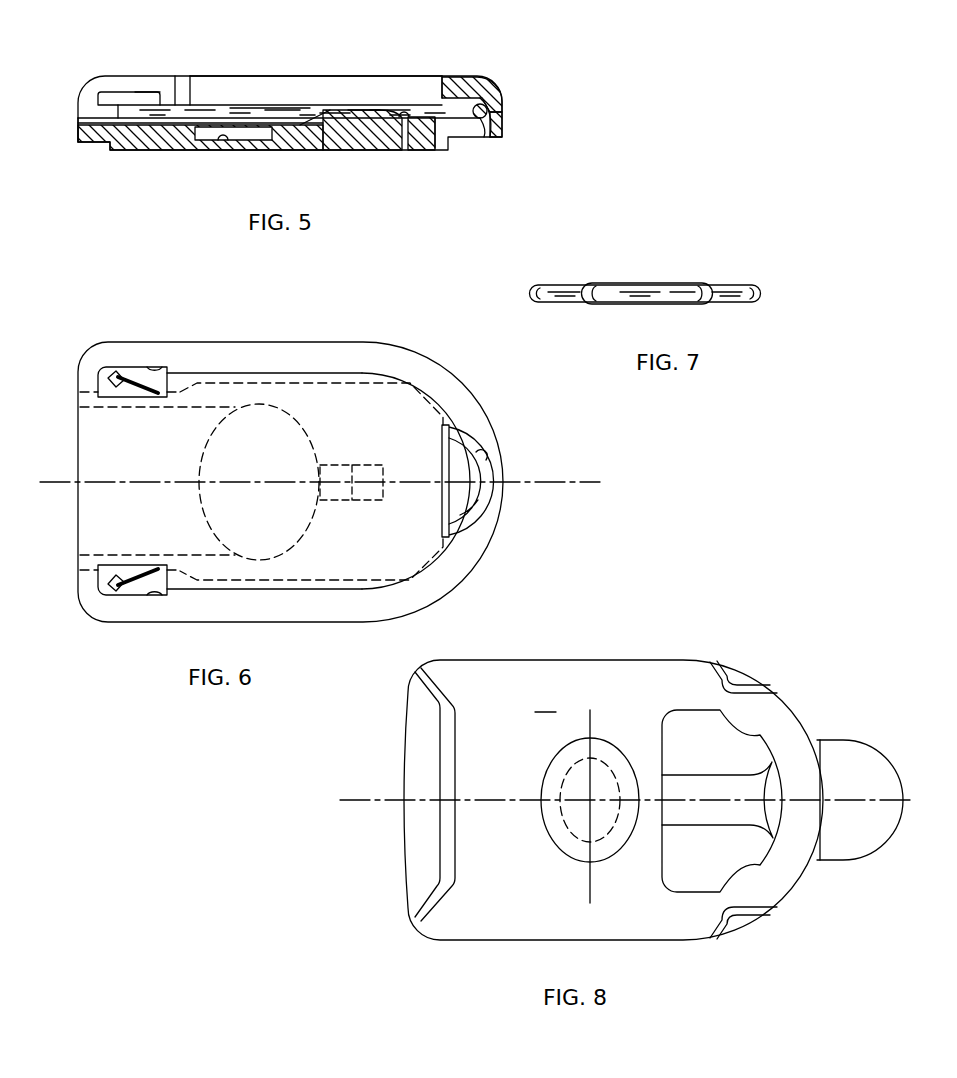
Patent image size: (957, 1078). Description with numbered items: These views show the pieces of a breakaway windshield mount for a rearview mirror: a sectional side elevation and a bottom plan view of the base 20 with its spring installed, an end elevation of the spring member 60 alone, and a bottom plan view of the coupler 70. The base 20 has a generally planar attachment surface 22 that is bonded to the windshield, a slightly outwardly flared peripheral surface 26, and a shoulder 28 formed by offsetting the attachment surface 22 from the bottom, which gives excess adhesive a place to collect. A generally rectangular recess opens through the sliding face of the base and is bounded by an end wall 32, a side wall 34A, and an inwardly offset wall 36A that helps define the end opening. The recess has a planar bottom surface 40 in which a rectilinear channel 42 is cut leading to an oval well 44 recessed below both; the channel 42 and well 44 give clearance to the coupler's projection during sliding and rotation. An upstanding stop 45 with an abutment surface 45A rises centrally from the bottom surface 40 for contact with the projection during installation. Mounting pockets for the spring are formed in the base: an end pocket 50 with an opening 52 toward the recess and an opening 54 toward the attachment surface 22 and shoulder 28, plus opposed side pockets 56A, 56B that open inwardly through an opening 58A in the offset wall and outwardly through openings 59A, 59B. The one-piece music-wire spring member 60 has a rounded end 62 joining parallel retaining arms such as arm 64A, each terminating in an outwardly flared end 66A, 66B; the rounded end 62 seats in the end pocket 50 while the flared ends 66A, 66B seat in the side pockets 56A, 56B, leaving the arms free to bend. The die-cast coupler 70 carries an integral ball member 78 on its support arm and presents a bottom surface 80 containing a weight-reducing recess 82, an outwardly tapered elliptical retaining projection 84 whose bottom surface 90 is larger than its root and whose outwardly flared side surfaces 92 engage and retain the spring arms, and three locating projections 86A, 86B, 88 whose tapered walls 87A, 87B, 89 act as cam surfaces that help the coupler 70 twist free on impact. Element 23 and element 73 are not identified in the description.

In FIG. 5, the base 20 is at (506, 80).
In FIG. 6, the base 20 is at (470, 367).
In FIG. 5, the attachment surface 22 is at (355, 150).
In FIG. 6, the attachment surface 22 is at (157, 505).
In FIG. 5, the end wall 23 is at (503, 121).
In FIG. 6, the end wall 23 is at (503, 518).
In FIG. 5, the peripheral surface 26 is at (290, 113).
In FIG. 6, the peripheral surface 26 is at (265, 342).
In FIG. 5, the shoulder 28 is at (93, 143).
In FIG. 6, the shoulder 28 is at (333, 372).
In FIG. 5, the end wall 32 is at (438, 77).
In FIG. 5, the side wall 34A is at (310, 83).
In FIG. 5, the inwardly offset wall 36A is at (117, 80).
In FIG. 5, the bottom surface 40 is at (402, 122).
In FIG. 5, the channel 42 is at (82, 120).
In FIG. 5, the well 44 is at (220, 135).
In FIG. 5, the stop 45 is at (348, 110).
In FIG. 5, the abutment surface 45A is at (310, 125).
In FIG. 5, the end pocket 50 is at (501, 98).
In FIG. 5, the opening 52 is at (440, 92).
In FIG. 5, the opening 54 is at (448, 143).
In FIG. 6, the opening 54 is at (487, 455).
In FIG. 5, the side pocket 56A is at (98, 98).
In FIG. 6, the side pocket 56A is at (105, 597).
In FIG. 6, the side pocket 56B is at (110, 372).
In FIG. 5, the opening 58A is at (135, 98).
In FIG. 6, the opening 59A is at (151, 597).
In FIG. 6, the opening 59B is at (162, 370).
In FIG. 5, the spring member 60 is at (220, 100).
In FIG. 7, the spring member 60 is at (715, 262).
In FIG. 5, the rounded end 62 is at (482, 118).
In FIG. 6, the rounded end 62 is at (488, 493).
In FIG. 7, the rounded end 62 is at (612, 294).
In FIG. 5, the retaining arm 64A is at (240, 107).
In FIG. 6, the flared end 66A is at (128, 388).
In FIG. 7, the flared end 66A is at (735, 296).
In FIG. 6, the flared end 66B is at (128, 577).
In FIG. 7, the flared end 66B is at (577, 297).
In FIG. 8, the coupler 70 is at (810, 678).
In FIG. 8, the neck 73 is at (818, 856).
In FIG. 8, the ball member 78 is at (856, 752).
In FIG. 8, the bottom surface 80 is at (545, 703).
In FIG. 8, the recess 82 is at (750, 728).
In FIG. 8, the retaining projection 84 is at (552, 843).
In FIG. 8, the locating projection 86A is at (742, 930).
In FIG. 8, the locating projection 86B is at (742, 677).
In FIG. 8, the tapered wall 87A is at (760, 917).
In FIG. 8, the tapered wall 87B is at (706, 662).
In FIG. 8, the locating projection 88 is at (420, 860).
In FIG. 8, the tapered wall 89 is at (450, 835).
In FIG. 8, the bottom surface 90 is at (569, 852).
In FIG. 8, the side surfaces 92 is at (560, 758).